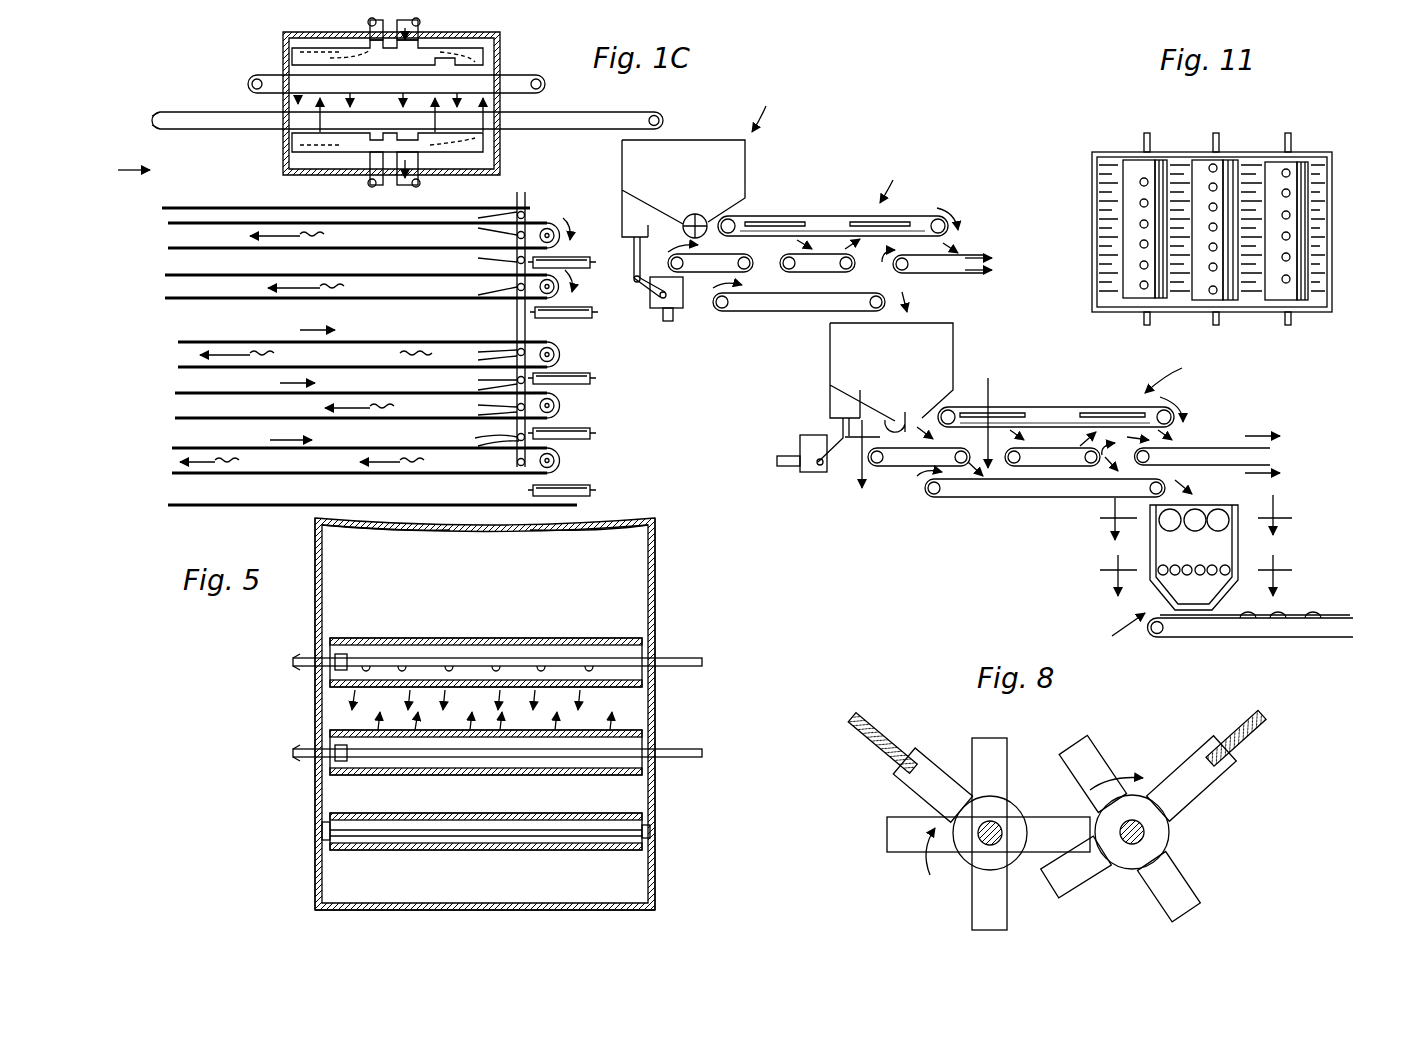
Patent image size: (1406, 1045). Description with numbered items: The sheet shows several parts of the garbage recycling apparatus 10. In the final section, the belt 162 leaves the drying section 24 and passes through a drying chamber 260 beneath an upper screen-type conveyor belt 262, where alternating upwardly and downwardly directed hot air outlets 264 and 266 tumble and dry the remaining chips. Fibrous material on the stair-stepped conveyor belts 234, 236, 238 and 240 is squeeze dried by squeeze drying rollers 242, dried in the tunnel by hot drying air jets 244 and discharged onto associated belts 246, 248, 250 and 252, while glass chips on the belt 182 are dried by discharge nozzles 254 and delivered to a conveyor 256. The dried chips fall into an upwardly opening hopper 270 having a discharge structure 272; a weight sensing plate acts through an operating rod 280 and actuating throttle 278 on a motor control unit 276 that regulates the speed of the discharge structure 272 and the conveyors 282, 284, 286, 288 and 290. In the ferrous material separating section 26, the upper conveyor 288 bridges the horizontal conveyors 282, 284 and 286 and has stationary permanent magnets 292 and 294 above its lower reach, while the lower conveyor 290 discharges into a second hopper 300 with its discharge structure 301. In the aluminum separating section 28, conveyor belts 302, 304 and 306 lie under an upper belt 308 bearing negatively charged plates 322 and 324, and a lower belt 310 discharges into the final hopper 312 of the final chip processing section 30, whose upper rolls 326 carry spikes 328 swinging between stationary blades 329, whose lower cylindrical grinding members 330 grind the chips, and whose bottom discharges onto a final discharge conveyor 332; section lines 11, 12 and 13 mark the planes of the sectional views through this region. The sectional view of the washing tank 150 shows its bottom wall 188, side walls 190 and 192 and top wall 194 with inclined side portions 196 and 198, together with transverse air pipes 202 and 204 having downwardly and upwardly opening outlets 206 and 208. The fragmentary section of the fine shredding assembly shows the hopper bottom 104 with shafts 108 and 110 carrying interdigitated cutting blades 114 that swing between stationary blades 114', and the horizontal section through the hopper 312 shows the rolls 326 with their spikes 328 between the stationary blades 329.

In FIG. 1C, the garbage recycling apparatus 10 is at (766, 109).
In FIG. 1C, the section line 11— 11 is at (1197, 517).
In FIG. 1C, the section line 12— 12 is at (1196, 581).
In FIG. 1C, the section line 13— 13 is at (917, 447).
In FIG. 1C, the drying section 24 is at (127, 170).
In FIG. 1C, the ferrous material separating section 26 is at (883, 181).
In FIG. 1C, the aluminum separating section 28 is at (1176, 376).
In FIG. 1C, the final chip processing section 30 is at (1116, 628).
In FIG. 8, the hopper bottom 104 is at (870, 740).
In FIG. 8, the driven horizontal shaft 108 is at (985, 840).
In FIG. 8, the driven horizontal shaft 110 is at (1140, 830).
In FIG. 8, the cutting blades 114 is at (1061, 828).
In FIG. 8, the stationary inwardly projecting blades 114' is at (1087, 753).
In FIG. 5, the tank 150 is at (315, 878).
In FIG. 1C, the conveyor belt 162 is at (226, 112).
In FIG. 1C, the conveyor belt 182 is at (193, 476).
In FIG. 5, the bottom wall 188 is at (490, 912).
In FIG. 5, the side wall 190 is at (315, 712).
In FIG. 5, the side wall 192 is at (655, 718).
In FIG. 5, the top wall 194 is at (380, 525).
In FIG. 5, the inclined side portion 196 is at (462, 528).
In FIG. 5, the inclined side portion 198 is at (576, 525).
In FIG. 5, the transverse air pipe 202 is at (680, 658).
In FIG. 5, the transverse air pipe 204 is at (695, 760).
In FIG. 5, the downwardly opening outlets 206 is at (590, 668).
In FIG. 5, the upwardly opening outlets 208 is at (600, 752).
In FIG. 1C, the conveyor belt 234 is at (185, 419).
In FIG. 1C, the conveyor belt 236 is at (180, 367).
In FIG. 1C, the conveyor belt 238 is at (170, 298).
In FIG. 1C, the conveyor belt 240 is at (172, 248).
In FIG. 1C, the squeeze drying rollers 242 is at (165, 208).
In FIG. 1C, the chain 244 is at (521, 210).
In FIG. 1C, the associated belt 246 is at (575, 428).
In FIG. 1C, the associated belt 248 is at (575, 373).
In FIG. 1C, the associated belt 250 is at (565, 318).
In FIG. 1C, the associated belt 252 is at (575, 272).
In FIG. 1C, the discharge nozzles 254 is at (475, 437).
In FIG. 1C, the conveyor 256 is at (575, 485).
In FIG. 1C, the drying chamber 260 is at (498, 40).
In FIG. 1C, the upper screen-type conveyor belt 262 is at (282, 74).
In FIG. 1C, the upwardly directed hot air outlets 264 is at (320, 140).
In FIG. 1C, the downwardly directed hot air outlets 266 is at (292, 60).
In FIG. 1C, the hopper 270 is at (745, 168).
In FIG. 1C, the discharge structure 272 is at (690, 214).
In FIG. 1C, the motor control unit 276 is at (678, 310).
In FIG. 1C, the actuating throttle 278 is at (648, 290).
In FIG. 1C, the operating rod 280 is at (630, 248).
In FIG. 1C, the horizontal conveyor 282 is at (708, 273).
In FIG. 1C, the horizontal conveyor 284 is at (815, 273).
In FIG. 1C, the horizontal conveyor 286 is at (960, 273).
In FIG. 1C, the upper conveyor 288 is at (820, 216).
In FIG. 1C, the lower conveyor 290 is at (765, 312).
In FIG. 1C, the permanent magnet 292 is at (765, 222).
In FIG. 1C, the permanent magnet 294 is at (895, 222).
In FIG. 1C, the second hopper 300 is at (945, 362).
In FIG. 1C, the discharge structure 301 is at (896, 418).
In FIG. 1C, the conveyor belt 302 is at (905, 467).
In FIG. 1C, the conveyor belt 304 is at (1055, 467).
In FIG. 1C, the conveyor belt 306 is at (1218, 448).
In FIG. 1C, the upper belt 308 is at (1063, 407).
In FIG. 1C, the lower belt 310 is at (985, 497).
In FIG. 1C, the final hopper 312 is at (1238, 552).
In FIG. 11, the final hopper 312 is at (1115, 152).
In FIG. 1C, the negatively charged plate 322 is at (1010, 413).
In FIG. 1C, the negatively charged plate 324 is at (1105, 413).
In FIG. 1C, the rolls 326 is at (1200, 512).
In FIG. 11, the rolls 326 is at (1200, 213).
In FIG. 11, the spikes 328 is at (1302, 283).
In FIG. 11, the stationary blades 329 is at (1105, 178).
In FIG. 1C, the cylindrical grinding members 330 is at (1205, 565).
In FIG. 1C, the final discharge conveyor 332 is at (1290, 638).